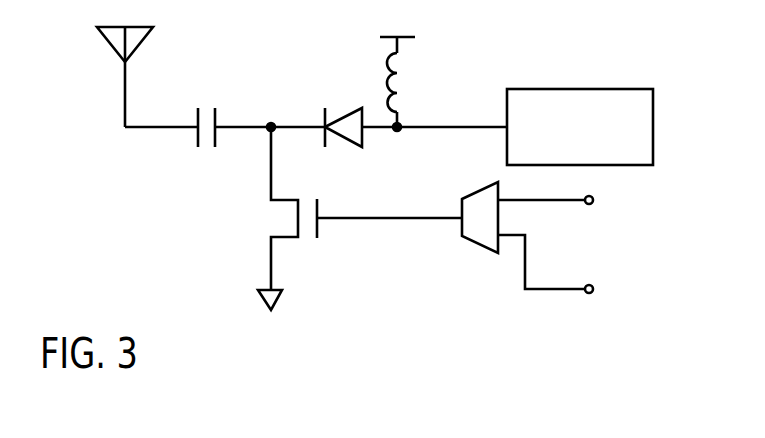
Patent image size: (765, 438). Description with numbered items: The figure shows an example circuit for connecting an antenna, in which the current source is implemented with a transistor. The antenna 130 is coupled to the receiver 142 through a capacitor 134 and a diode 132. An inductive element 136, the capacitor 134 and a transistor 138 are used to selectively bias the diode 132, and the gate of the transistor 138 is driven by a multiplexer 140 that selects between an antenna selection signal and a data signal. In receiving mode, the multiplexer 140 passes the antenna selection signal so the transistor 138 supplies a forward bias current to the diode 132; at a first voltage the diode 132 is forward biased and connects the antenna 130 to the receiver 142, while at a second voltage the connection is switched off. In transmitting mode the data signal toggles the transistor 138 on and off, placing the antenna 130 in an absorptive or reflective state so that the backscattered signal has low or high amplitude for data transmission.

The antenna 130 is at (108, 50).
The diode 132 is at (352, 111).
The capacitor 134 is at (216, 111).
The inductive element 136 is at (398, 90).
The transistor 138 is at (283, 240).
The multiplexer 140 is at (484, 247).
The receiver 142 is at (593, 151).